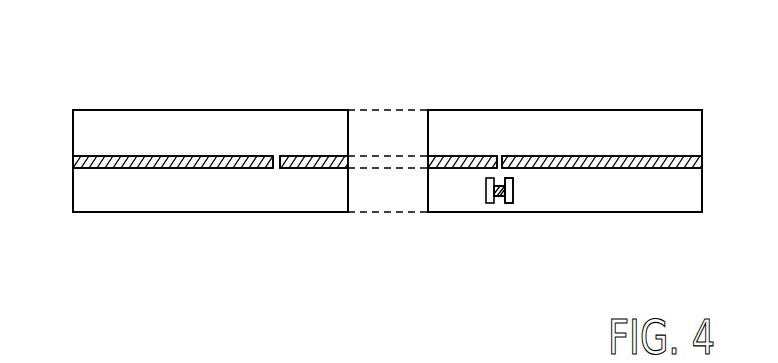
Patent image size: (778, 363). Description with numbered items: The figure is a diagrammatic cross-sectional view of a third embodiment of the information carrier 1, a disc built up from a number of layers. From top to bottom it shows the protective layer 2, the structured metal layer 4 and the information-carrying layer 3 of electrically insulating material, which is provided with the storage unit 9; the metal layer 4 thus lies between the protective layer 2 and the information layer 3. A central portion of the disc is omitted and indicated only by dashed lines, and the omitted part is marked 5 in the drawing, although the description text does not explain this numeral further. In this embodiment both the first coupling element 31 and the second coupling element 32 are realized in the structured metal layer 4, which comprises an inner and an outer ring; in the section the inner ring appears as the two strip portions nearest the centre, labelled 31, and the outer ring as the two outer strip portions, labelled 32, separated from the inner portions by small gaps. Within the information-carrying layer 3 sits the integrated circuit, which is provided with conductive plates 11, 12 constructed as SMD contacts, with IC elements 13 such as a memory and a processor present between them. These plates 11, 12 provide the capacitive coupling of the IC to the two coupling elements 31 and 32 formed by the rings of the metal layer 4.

The information carrier 1 is at (388, 80).
The protective layer 2 is at (90, 139).
The information-carrying layer 3 is at (90, 191).
The structured metal layer 4 is at (90, 163).
The break / omitted central portion 5 is at (389, 188).
The storage unit 9 is at (223, 195).
The conductive plate 11 is at (491, 203).
The conductive plate 12 is at (507, 180).
The IC elements 13 is at (487, 190).
The first coupling element 31 is at (298, 152).
The second coupling element 32 is at (208, 152).